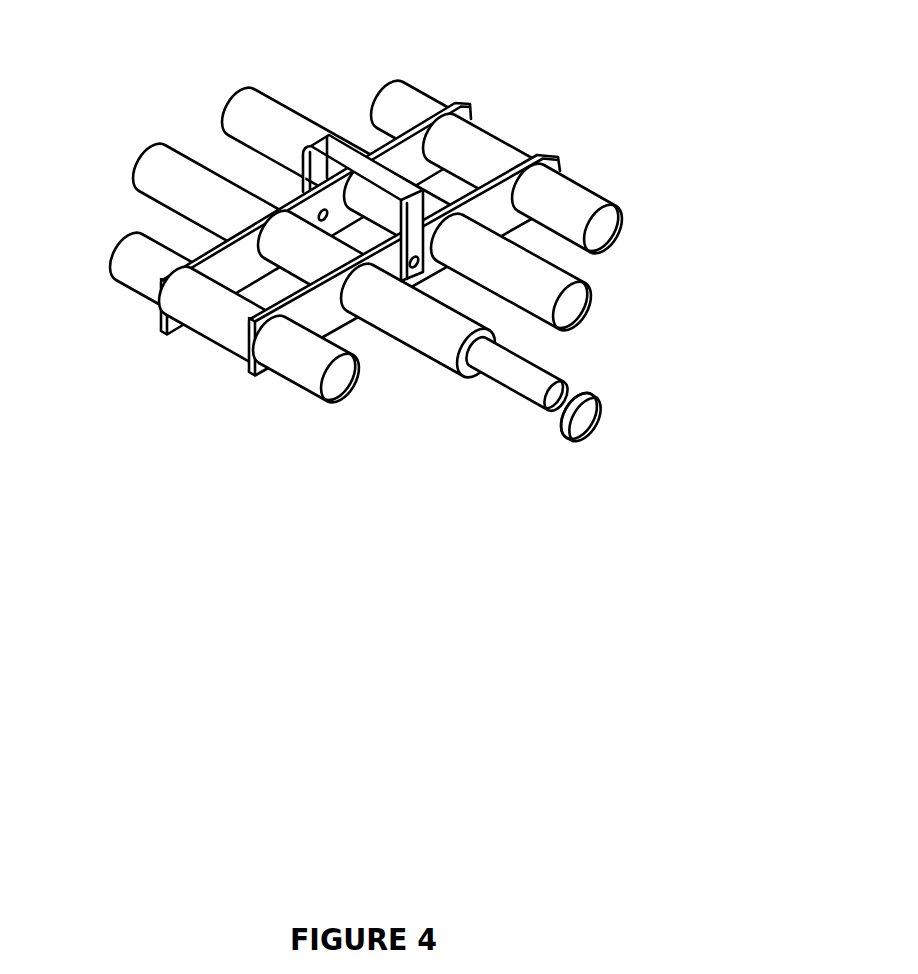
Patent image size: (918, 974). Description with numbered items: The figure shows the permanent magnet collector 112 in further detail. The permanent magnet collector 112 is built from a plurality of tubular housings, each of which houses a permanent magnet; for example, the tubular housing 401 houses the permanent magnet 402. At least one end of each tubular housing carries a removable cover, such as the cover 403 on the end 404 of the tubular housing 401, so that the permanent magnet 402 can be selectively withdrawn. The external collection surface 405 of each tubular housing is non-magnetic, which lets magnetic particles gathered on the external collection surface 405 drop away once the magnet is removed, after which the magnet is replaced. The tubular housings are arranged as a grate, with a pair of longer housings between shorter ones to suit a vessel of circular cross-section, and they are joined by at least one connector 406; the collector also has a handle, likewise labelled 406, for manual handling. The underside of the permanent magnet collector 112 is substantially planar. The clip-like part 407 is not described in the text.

The permanent magnet collector 112 is at (391, 279).
The tubular housing 401 is at (450, 352).
The permanent magnet 402 is at (523, 393).
The cover 403 is at (553, 458).
The end 404 is at (500, 342).
The external collection surface 405 is at (539, 320).
The connector 406 is at (503, 188).
The retaining clip 407 is at (340, 148).